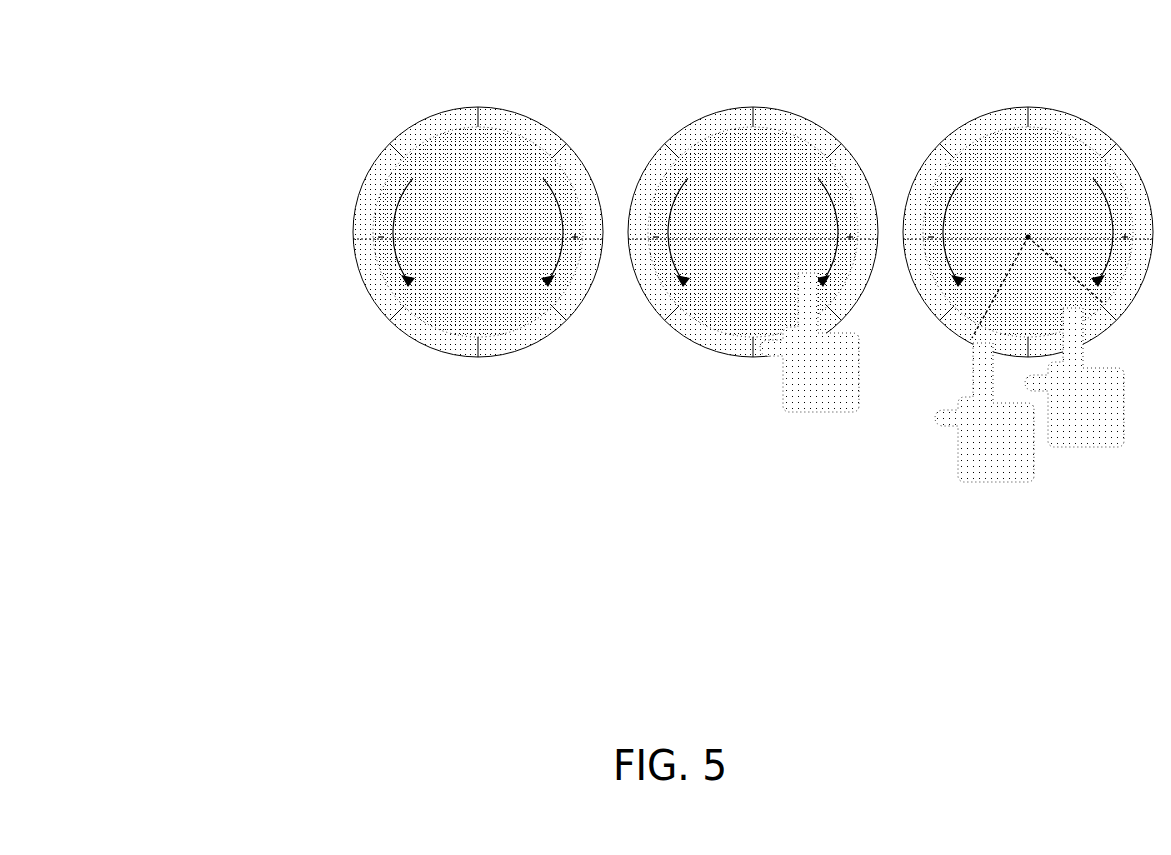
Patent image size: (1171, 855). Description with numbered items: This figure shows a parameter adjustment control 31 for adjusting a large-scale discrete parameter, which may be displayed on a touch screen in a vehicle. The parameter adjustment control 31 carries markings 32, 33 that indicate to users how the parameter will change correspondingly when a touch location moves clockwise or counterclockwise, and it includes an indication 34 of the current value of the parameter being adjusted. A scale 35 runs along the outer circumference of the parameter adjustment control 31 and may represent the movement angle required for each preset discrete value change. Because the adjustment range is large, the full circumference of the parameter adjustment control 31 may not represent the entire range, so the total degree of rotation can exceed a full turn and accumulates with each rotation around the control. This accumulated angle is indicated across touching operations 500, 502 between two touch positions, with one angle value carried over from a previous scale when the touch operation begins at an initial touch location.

The parameter adjustment control 31 is at (668, 260).
The marking 32 is at (410, 187).
The marking 33 is at (553, 213).
The indication of a current value 34 is at (355, 240).
The scale 35 is at (373, 303).
The touching operation 500 is at (726, 225).
The touching operation 502 is at (1014, 260).